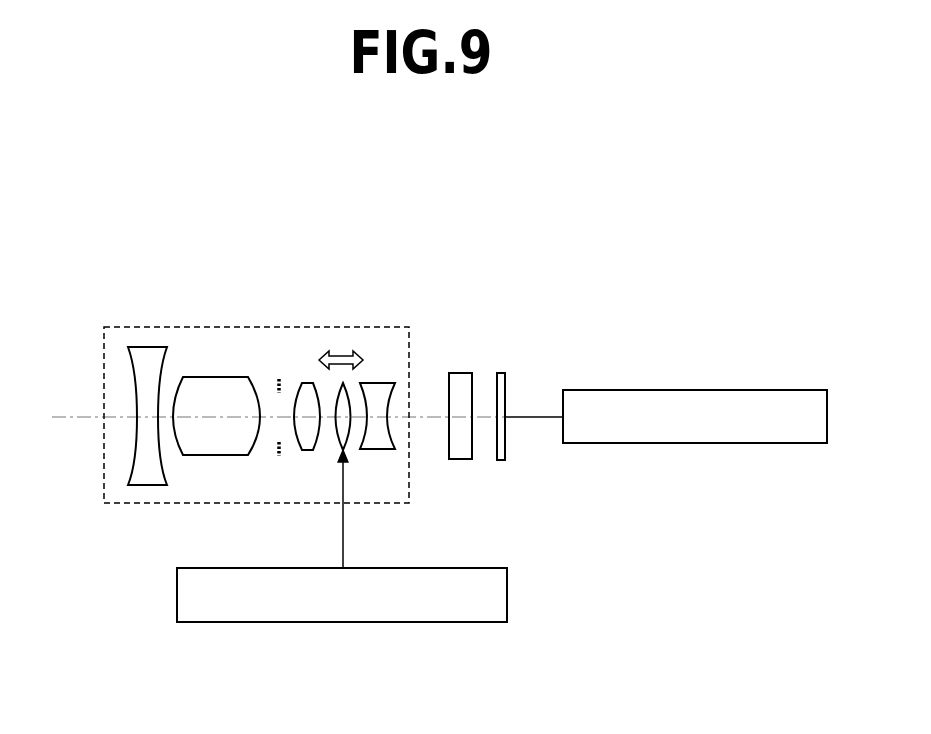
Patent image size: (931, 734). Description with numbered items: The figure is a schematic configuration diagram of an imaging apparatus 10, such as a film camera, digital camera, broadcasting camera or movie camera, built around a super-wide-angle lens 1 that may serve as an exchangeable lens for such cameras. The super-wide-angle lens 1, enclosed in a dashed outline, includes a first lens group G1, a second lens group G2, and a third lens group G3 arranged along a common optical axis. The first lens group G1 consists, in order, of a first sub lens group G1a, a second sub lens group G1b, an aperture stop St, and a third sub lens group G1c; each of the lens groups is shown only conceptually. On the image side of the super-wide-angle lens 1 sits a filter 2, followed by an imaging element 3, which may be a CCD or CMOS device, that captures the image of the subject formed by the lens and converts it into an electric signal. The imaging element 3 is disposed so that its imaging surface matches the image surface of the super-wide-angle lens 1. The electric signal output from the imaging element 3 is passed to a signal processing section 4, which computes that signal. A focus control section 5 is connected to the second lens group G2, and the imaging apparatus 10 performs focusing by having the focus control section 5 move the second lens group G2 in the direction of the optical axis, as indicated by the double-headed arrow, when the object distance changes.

The imaging apparatus 10 is at (482, 176).
The super-wide-angle lens 1 is at (103, 488).
The first lens group G1 is at (128, 267).
The first sub lens group G1a is at (150, 347).
The second sub lens group G1b is at (220, 377).
The aperture stop St is at (280, 382).
The third sub lens group G1c is at (307, 383).
The second lens group G2 is at (349, 398).
The third lens group G3 is at (395, 383).
The filter 2 is at (465, 373).
The imaging element 3 is at (501, 373).
The signal processing section 4 is at (812, 390).
The focus control section 5 is at (487, 622).